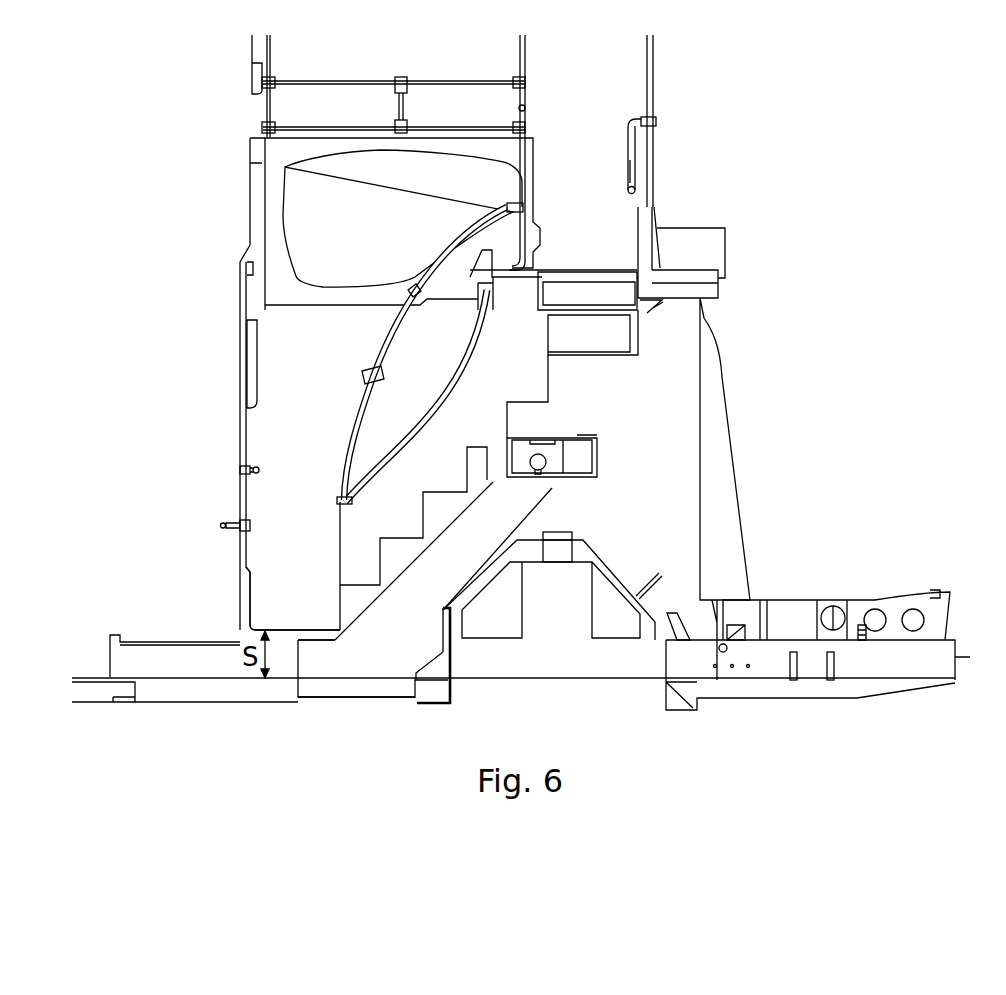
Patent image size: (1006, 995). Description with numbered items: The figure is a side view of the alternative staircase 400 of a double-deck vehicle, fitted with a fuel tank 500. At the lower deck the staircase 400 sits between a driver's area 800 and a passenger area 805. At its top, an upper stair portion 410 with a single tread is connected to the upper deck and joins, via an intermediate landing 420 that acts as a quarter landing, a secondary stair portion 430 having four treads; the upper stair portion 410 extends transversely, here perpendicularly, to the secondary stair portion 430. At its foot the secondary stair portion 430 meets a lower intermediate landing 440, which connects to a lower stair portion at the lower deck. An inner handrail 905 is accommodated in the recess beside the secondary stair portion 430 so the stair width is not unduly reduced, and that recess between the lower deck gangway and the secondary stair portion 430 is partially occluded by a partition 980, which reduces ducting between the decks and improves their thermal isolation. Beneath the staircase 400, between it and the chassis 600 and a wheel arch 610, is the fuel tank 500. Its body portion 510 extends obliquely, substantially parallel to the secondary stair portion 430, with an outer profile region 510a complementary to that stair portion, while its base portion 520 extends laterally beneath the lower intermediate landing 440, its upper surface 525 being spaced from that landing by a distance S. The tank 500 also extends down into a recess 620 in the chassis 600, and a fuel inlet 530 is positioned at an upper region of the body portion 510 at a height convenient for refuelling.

The staircase 400 is at (272, 456).
The upper stair portion 410 is at (590, 307).
The intermediate landing 420 is at (593, 357).
The secondary stair portion 430 is at (487, 480).
The lower intermediate landing 440 is at (288, 630).
The fuel tank 500 is at (377, 543).
The body portion 510 is at (425, 590).
The outer profile region 510a is at (470, 571).
The base portion 520 is at (315, 682).
The upper surface 525 is at (315, 643).
The fuel inlet 530 is at (547, 457).
The chassis 600 is at (735, 690).
The wheel arch 610 is at (535, 552).
The recess 620 is at (360, 690).
The driver's area 800 is at (862, 435).
The passenger area 805 is at (136, 508).
The inner handrail 905 is at (383, 332).
The partition 980 is at (393, 417).